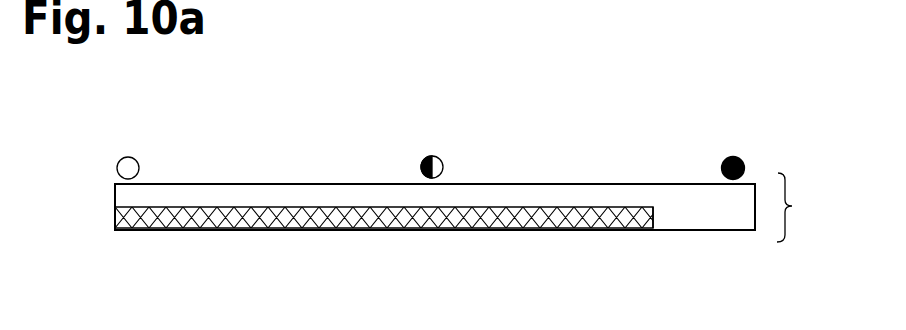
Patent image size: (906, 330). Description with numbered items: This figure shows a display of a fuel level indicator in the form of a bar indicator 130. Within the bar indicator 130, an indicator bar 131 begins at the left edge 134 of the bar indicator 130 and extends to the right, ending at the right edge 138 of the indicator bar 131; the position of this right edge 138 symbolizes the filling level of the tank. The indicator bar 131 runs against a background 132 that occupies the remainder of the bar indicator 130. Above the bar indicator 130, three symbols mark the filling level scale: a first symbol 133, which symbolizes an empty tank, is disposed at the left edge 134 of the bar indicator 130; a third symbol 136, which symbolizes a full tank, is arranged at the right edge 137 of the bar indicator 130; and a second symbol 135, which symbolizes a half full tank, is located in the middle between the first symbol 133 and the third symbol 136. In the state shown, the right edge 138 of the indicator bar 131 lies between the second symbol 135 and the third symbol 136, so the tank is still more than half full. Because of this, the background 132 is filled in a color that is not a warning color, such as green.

The bar indicator 130 is at (807, 207).
The indicator bar 131 is at (363, 223).
The background 132 is at (560, 195).
The first symbol 133 is at (128, 166).
The left edge 134 is at (113, 197).
The second symbol 135 is at (435, 165).
The third symbol 136 is at (735, 158).
The right edge 137 is at (755, 207).
The right edge 138 is at (657, 230).